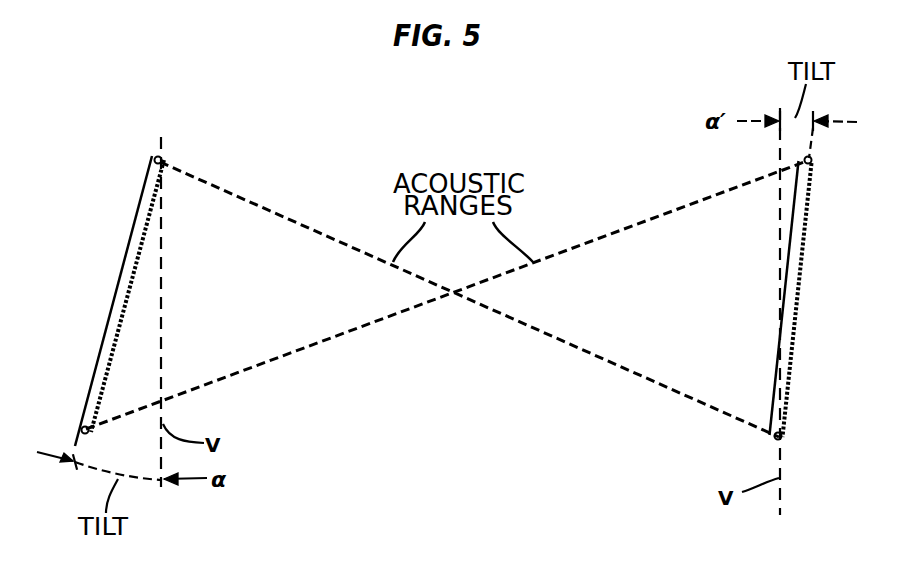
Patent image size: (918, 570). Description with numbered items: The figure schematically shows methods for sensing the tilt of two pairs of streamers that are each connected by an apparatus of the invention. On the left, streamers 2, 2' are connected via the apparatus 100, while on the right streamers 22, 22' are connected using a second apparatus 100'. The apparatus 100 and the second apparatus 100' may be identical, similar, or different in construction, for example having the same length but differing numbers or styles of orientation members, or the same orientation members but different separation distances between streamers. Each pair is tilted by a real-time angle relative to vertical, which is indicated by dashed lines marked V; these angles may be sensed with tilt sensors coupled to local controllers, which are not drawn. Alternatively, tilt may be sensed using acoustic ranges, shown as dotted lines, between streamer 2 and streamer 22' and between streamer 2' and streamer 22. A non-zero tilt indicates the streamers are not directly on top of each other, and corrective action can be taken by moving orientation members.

The streamer 2 is at (132, 148).
The streamer 2' is at (57, 417).
The apparatus 100 is at (96, 301).
The streamer 22 is at (843, 153).
The streamer 22' is at (819, 447).
The second apparatus 100' is at (831, 299).